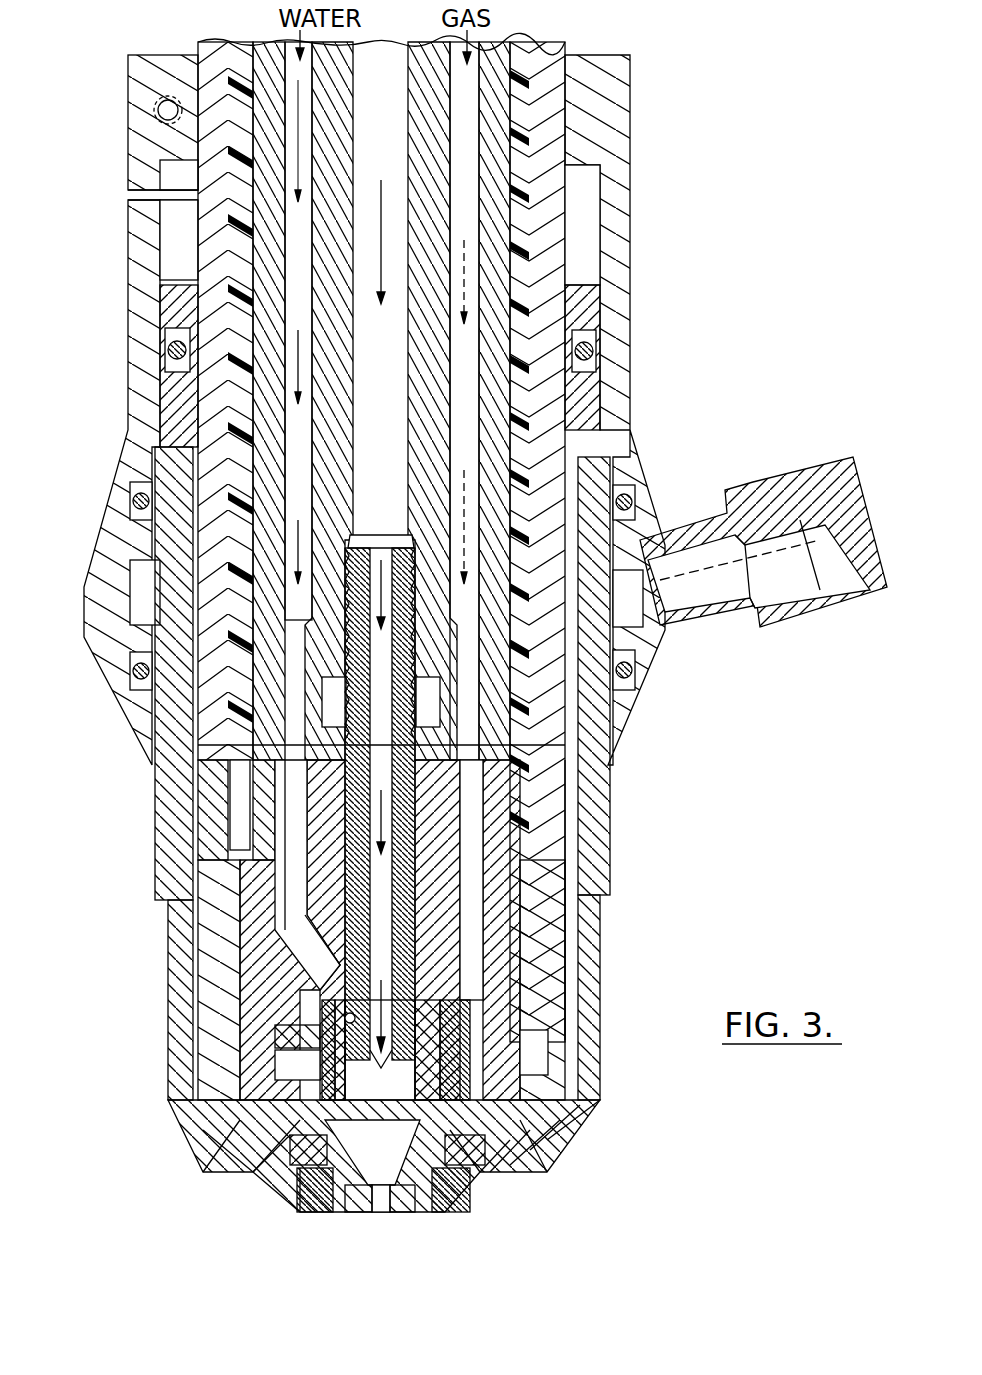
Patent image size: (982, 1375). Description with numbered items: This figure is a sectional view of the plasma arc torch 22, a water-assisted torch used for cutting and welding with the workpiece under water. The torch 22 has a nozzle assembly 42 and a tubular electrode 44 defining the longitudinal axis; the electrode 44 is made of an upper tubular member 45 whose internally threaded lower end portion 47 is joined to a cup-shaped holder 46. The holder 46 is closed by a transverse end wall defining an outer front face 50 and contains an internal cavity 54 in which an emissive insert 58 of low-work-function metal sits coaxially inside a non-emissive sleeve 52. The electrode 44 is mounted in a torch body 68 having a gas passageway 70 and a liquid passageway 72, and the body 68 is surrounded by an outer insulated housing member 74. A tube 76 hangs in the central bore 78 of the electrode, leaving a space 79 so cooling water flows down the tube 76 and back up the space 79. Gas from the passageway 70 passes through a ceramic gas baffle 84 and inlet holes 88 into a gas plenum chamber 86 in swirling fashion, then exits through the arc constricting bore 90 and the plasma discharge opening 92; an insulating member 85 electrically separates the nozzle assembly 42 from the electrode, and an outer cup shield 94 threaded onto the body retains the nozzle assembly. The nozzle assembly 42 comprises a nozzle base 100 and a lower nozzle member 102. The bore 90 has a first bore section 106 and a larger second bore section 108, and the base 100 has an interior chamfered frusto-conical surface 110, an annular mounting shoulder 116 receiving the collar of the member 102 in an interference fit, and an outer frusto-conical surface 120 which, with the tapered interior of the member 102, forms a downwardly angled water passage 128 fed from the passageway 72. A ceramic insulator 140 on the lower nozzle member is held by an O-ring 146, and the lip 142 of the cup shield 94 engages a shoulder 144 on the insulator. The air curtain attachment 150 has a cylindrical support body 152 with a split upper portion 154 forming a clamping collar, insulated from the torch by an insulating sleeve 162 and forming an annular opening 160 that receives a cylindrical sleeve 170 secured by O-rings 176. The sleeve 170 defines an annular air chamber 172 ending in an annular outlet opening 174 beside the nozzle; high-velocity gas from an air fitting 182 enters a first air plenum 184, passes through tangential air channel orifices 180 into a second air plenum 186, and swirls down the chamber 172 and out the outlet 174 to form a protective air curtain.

The plasma arc torch 22 is at (690, 408).
The nozzle assembly 42 is at (336, 1255).
The tubular electrode 44 is at (305, 845).
The upper tubular member 45 is at (290, 800).
The holder 46 is at (480, 1055).
The internally threaded lower end portion 47 is at (470, 1010).
The outer front face 50 is at (510, 1150).
The non-emissive sleeve 52 is at (320, 1050).
The internal cavity 54 is at (440, 1060).
The emissive insert 58 is at (395, 1085).
The plasma arc torch body 68 is at (318, 80).
The gas passageway 70 is at (468, 60).
The liquid passageway 72 is at (305, 150).
The outer insulated housing member 74 is at (555, 220).
The tube 76 is at (350, 540).
The central bore 78 is at (440, 740).
The space 79 is at (515, 855).
The gas baffle 84 is at (345, 1000).
The insulating member 85 is at (230, 885).
The gas plenum chamber 86 is at (262, 1158).
The inlet holes 88 is at (545, 1070).
The arc constricting bore 90 is at (468, 1187).
The plasma discharge opening 92 is at (377, 1215).
The outer cup shield 94 is at (235, 918).
The nozzle base 100 is at (320, 1095).
The lower nozzle member 102 is at (285, 1167).
The first bore section 106 is at (366, 1212).
The second bore section 108 is at (396, 1213).
The frusto-conical surface 110 is at (487, 1165).
The annular mounting shoulder 116 is at (560, 1157).
The outer frusto-conical surface 120 is at (298, 1215).
The water passage 128 is at (432, 1205).
The ceramic insulator 140 is at (316, 1212).
The lip 142 is at (288, 1190).
The shoulder 144 is at (452, 1198).
The O-ring 146 is at (483, 1180).
The air curtain attachment 150 is at (98, 440).
The cylindrical support body 152 is at (632, 100).
The split upper portion 154 is at (160, 55).
The annular opening 160 is at (158, 735).
The insulating sleeve 162 is at (600, 298).
The cylindrical sleeve 170 is at (630, 778).
The annular air chamber 172 is at (572, 920).
The annular outlet opening 174 is at (240, 1160).
The O-rings 176 is at (138, 672).
The air channel orifice 180 is at (640, 605).
The air fitting 182 is at (812, 470).
The first air plenum 184 is at (618, 570).
The second air plenum 186 is at (150, 593).